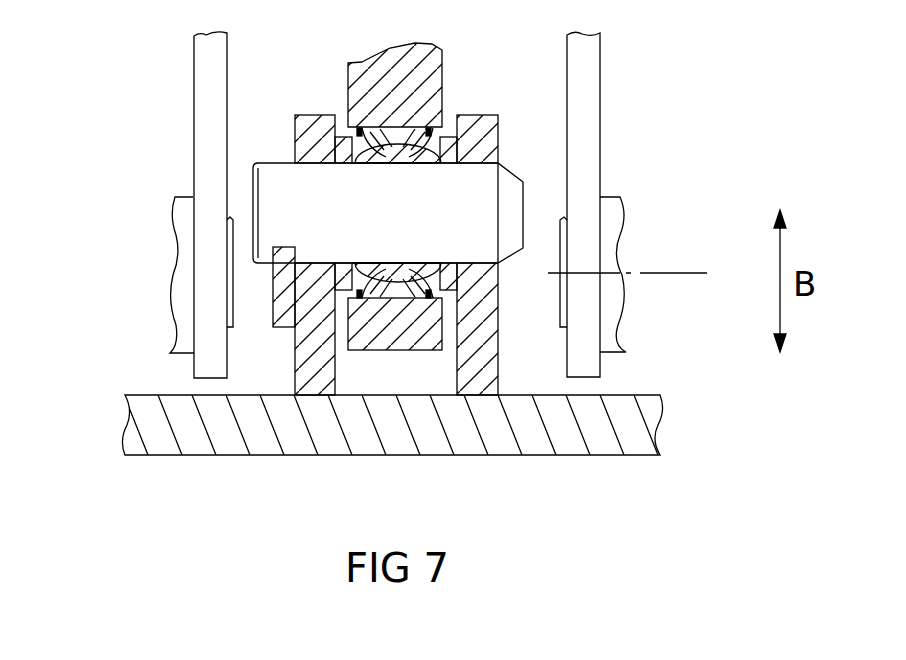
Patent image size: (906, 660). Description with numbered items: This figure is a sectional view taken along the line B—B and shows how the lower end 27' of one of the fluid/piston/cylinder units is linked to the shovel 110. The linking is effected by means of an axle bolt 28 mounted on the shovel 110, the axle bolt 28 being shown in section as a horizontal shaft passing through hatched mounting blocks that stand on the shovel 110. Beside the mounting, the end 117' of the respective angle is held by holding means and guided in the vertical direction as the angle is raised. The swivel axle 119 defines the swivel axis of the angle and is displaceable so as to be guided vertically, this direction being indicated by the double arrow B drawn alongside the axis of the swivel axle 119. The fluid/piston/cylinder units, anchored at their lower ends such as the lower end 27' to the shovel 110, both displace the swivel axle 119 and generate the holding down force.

The axle bolt 28 is at (273, 178).
The end of angle 117' is at (155, 205).
The lower end of fluid/piston/cylinder unit 27' is at (377, 408).
The shovel 110 is at (490, 437).
The swivel axle 119 is at (650, 273).